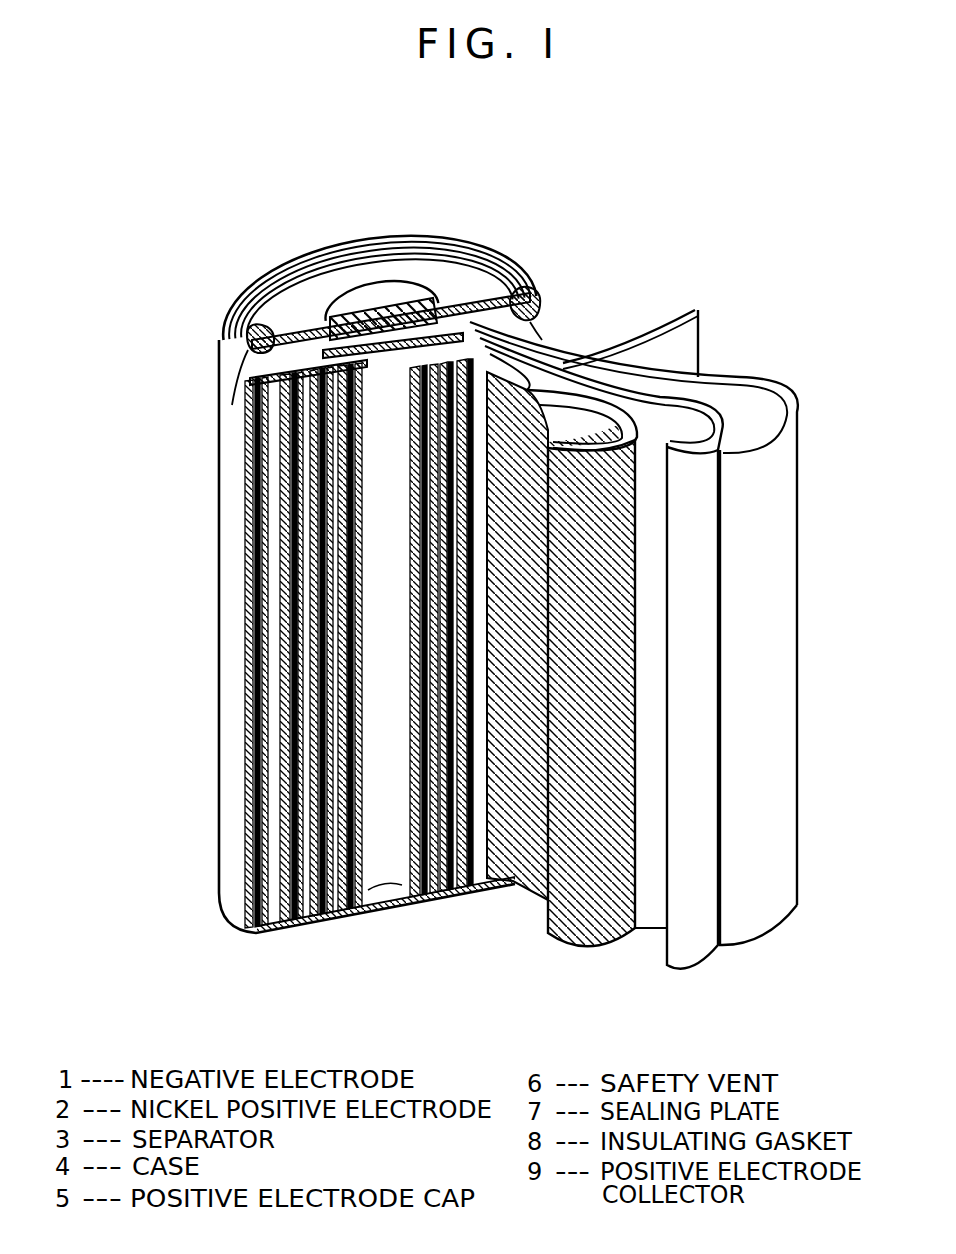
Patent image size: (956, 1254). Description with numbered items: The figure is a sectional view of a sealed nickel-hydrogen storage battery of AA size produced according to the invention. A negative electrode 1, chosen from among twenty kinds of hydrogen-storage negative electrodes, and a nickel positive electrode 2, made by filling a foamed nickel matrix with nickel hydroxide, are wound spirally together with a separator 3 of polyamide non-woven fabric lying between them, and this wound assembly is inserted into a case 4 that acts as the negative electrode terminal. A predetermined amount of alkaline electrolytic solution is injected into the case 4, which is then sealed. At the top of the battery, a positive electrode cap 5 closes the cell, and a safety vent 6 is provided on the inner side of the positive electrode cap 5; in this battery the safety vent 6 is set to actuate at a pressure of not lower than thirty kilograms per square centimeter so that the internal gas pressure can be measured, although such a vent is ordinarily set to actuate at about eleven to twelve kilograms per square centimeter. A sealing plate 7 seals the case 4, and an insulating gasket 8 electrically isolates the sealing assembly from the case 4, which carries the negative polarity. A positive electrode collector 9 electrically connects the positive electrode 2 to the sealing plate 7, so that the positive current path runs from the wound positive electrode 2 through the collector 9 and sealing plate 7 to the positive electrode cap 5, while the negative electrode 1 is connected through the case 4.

The negative electrode 1 is at (778, 546).
The nickel positive electrode 2 is at (597, 935).
The separator 3 is at (700, 940).
The case 4 is at (232, 650).
The positive electrode cap 5 is at (357, 297).
The safety vent 6 is at (373, 327).
The sealing plate 7 is at (470, 310).
The insulating gasket 8 is at (247, 343).
The positive electrode collector 9 is at (275, 362).